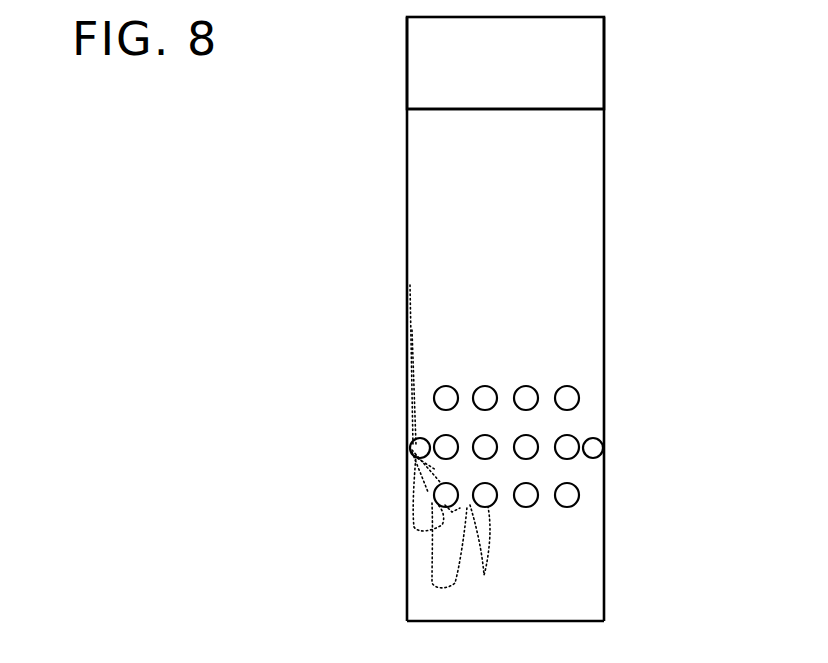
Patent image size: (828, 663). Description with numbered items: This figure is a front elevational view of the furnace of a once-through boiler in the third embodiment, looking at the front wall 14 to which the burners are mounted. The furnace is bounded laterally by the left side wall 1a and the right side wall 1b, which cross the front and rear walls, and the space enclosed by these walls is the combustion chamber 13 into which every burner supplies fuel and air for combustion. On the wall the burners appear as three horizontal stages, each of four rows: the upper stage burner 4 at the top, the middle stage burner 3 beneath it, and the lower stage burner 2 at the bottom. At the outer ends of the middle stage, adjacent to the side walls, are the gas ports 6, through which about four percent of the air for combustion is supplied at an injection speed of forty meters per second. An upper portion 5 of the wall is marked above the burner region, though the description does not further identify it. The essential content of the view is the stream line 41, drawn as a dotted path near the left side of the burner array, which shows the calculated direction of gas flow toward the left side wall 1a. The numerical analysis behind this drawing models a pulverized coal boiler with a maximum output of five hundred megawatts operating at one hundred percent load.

The left side wall 1a is at (407, 211).
The right side wall 1b is at (605, 211).
The header region 5 is at (590, 70).
The combustion chamber 13 is at (430, 150).
The front wall 14 is at (580, 550).
The upper stage burner 4 is at (566, 386).
The middle stage burner 3 is at (566, 435).
The lower stage burner 2 is at (578, 495).
The gas port 6 is at (408, 447).
The stream line 41 is at (430, 489).